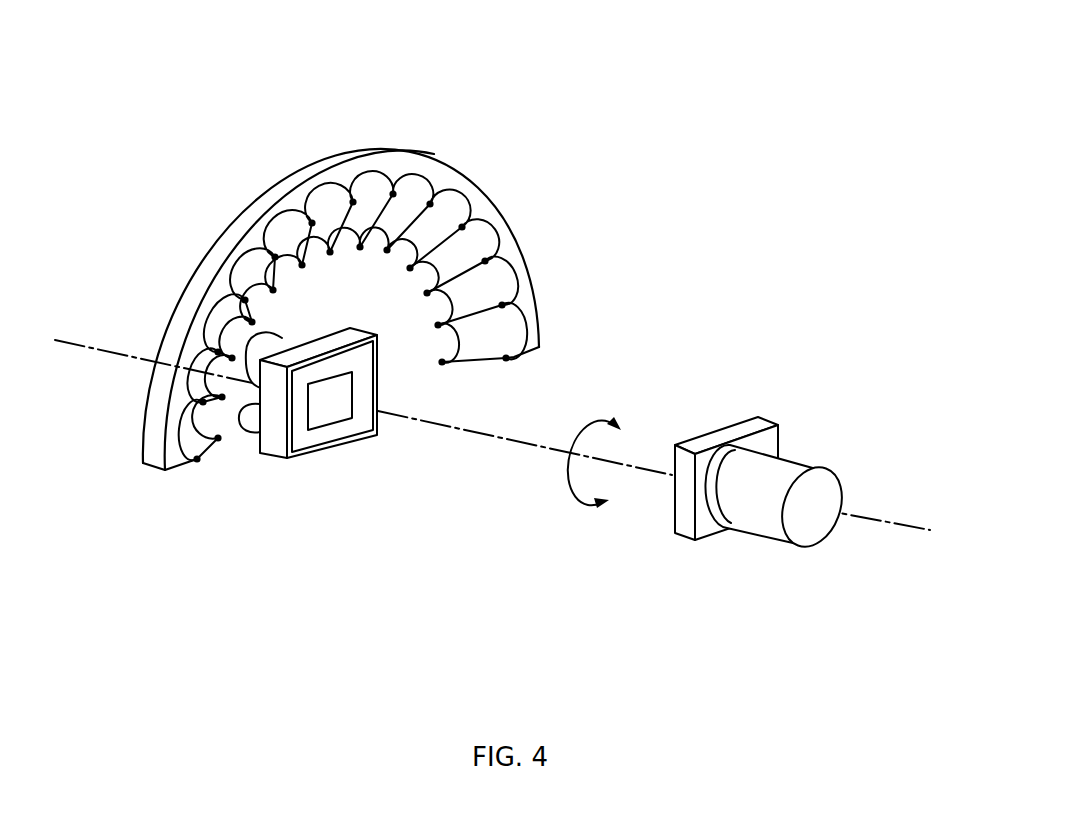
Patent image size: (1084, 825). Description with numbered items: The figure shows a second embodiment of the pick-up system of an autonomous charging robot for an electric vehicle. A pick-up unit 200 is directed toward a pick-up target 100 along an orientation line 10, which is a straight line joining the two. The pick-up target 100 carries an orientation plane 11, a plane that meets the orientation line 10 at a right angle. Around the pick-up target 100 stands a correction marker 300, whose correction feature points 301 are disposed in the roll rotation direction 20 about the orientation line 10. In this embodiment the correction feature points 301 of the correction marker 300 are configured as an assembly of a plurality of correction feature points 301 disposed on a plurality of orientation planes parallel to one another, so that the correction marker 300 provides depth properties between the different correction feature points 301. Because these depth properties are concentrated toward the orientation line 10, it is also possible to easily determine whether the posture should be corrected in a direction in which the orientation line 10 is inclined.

The orientation line 10 is at (92, 343).
The orientation plane 11 is at (330, 427).
The roll rotation direction 20 is at (597, 417).
The pick-up target 100 is at (293, 462).
The pick-up unit 200 is at (752, 565).
The correction marker 300 is at (347, 143).
The correction feature points 301 is at (489, 258).